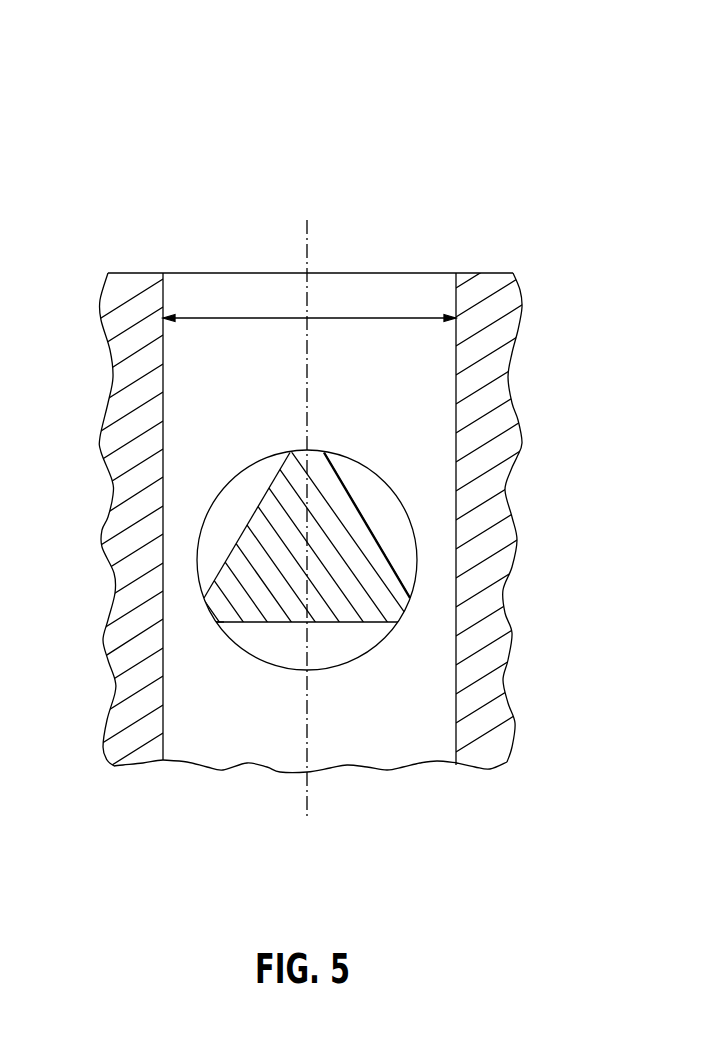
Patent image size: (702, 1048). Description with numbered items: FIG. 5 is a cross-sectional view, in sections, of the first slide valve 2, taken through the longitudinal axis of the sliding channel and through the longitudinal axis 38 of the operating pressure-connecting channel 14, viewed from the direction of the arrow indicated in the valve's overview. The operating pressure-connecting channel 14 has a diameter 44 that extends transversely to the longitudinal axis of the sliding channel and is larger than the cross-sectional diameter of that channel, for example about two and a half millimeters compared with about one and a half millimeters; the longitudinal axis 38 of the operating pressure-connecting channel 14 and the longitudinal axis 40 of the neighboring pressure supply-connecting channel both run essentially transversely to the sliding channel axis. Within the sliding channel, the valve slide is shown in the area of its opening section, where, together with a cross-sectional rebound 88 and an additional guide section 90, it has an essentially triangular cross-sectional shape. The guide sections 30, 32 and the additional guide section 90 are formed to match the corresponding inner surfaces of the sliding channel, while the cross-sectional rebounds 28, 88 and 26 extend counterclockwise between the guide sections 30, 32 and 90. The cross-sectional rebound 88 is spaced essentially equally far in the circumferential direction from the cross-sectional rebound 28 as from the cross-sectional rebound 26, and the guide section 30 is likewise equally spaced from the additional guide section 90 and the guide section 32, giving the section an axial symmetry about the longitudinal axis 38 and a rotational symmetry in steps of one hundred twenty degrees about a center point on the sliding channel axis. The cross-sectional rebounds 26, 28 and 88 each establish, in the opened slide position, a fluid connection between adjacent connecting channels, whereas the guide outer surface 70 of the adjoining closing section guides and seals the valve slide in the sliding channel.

The first slide valve 2 is at (183, 145).
The operating pressure-connecting channel 14 is at (395, 280).
The cross-sectional rebound 26 is at (277, 625).
The cross-sectional rebound 28 is at (352, 495).
The guide section 30 is at (408, 611).
The guide section 32 is at (298, 449).
The longitudinal axis 38 is at (308, 250).
The longitudinal axis 40 is at (482, 290).
The diameter 44 is at (257, 318).
The guide outer surface 70 is at (357, 458).
The cross-sectional rebound 88 is at (262, 495).
The additional guide section 90 is at (207, 613).